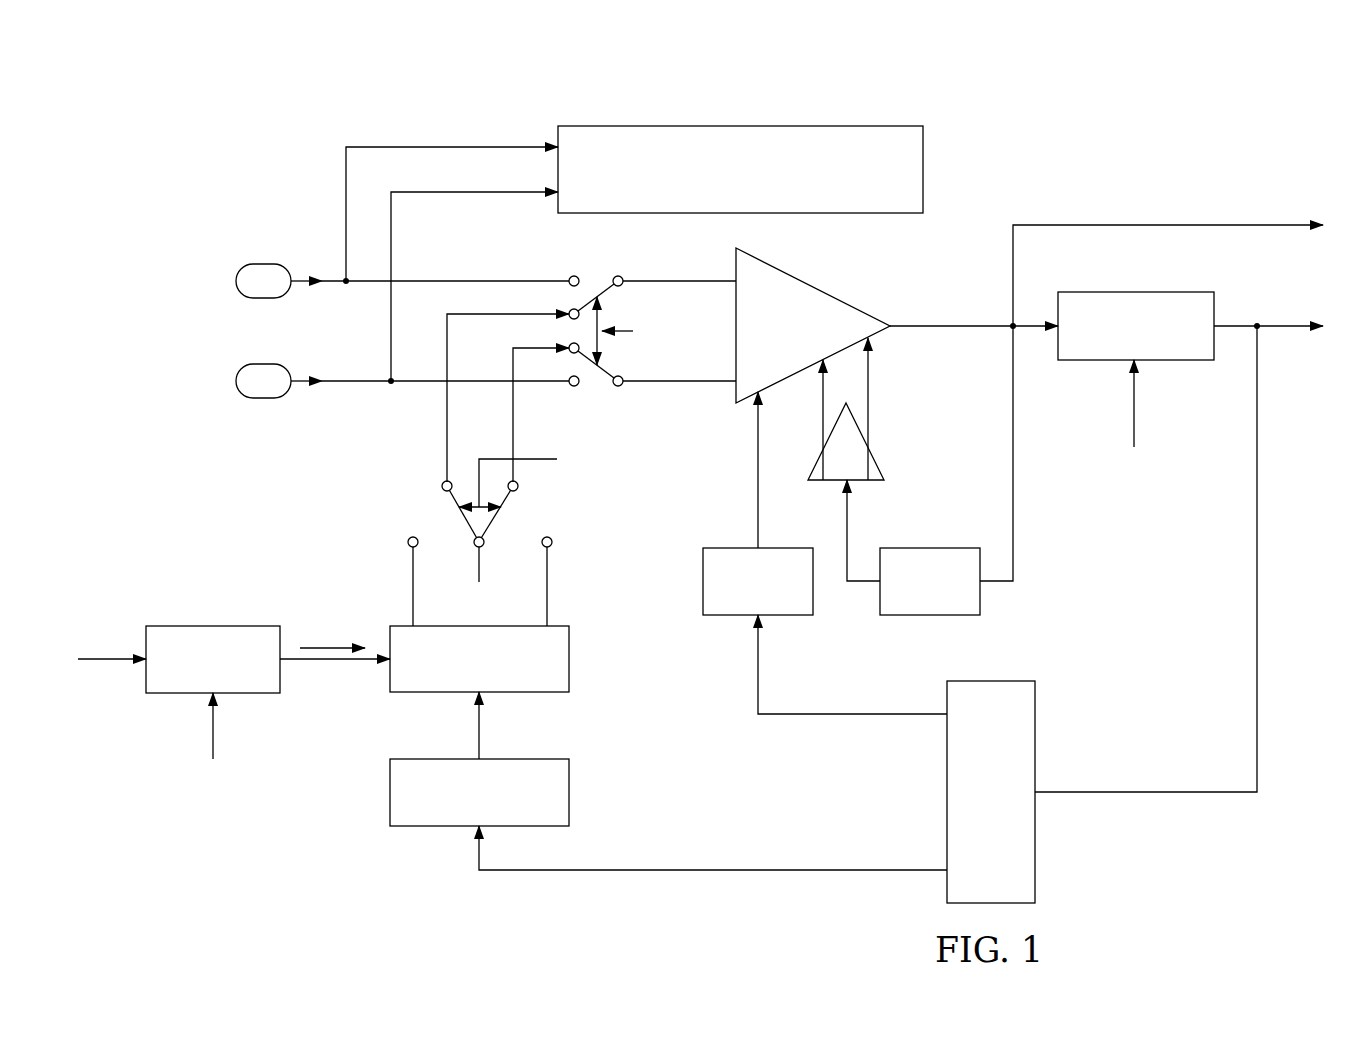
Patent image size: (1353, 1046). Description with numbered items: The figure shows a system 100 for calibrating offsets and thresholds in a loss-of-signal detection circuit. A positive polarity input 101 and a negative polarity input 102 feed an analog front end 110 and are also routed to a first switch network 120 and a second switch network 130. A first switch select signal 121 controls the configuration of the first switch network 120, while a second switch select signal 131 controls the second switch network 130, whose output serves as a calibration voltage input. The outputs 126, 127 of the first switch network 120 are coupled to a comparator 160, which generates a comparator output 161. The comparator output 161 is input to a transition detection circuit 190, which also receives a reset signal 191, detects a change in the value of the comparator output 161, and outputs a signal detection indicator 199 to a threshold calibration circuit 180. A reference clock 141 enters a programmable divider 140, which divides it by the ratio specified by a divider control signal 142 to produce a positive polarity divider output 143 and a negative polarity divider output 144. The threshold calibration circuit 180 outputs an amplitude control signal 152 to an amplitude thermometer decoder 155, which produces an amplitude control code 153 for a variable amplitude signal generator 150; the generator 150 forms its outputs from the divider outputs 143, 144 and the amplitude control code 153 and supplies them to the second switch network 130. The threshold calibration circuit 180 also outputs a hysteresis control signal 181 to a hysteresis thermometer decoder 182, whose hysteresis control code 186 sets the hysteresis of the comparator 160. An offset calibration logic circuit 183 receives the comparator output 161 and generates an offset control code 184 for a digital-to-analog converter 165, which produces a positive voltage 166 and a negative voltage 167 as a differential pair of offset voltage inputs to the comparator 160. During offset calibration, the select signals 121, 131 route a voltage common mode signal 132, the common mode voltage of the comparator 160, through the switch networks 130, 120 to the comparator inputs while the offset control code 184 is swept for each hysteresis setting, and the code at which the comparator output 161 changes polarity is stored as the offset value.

The system 100 is at (406, 95).
The positive polarity input 101 is at (263, 263).
The negative polarity input 102 is at (263, 399).
The analog front end 110 is at (742, 123).
The first switch network 120 is at (597, 395).
The first switch select signal 121 is at (633, 331).
The first amplifier input 126 is at (680, 278).
The second amplifier input 127 is at (682, 385).
The second switch network 130 is at (427, 513).
The second switch select signal 131 is at (533, 458).
The voltage common mode signal 132 is at (482, 563).
The programmable divider 140 is at (200, 625).
The reference clock 141 is at (112, 663).
The divider control signal 142 is at (212, 727).
The positive polarity divider output 143 is at (333, 667).
The negative polarity divider output 144 is at (327, 648).
The variable amplitude signal generator 150 is at (433, 697).
The amplitude control signal 152 is at (713, 872).
The amplitude control code 153 is at (482, 725).
The amplitude thermometer decoder 155 is at (390, 793).
The comparator 160 is at (818, 288).
The comparator output 161 is at (953, 323).
The digital-to-analog converter 165 is at (878, 462).
The positive voltage 166 is at (820, 413).
The negative voltage 167 is at (873, 392).
The threshold calibration circuit 180 is at (1035, 838).
The hysteresis control signal 181 is at (755, 665).
The hysteresis thermometer decoder 182 is at (703, 578).
The offset calibration logic circuit 183 is at (928, 618).
The offset control code 184 is at (852, 520).
The hysteresis control code 186 is at (755, 468).
The transition detection circuit 190 is at (1152, 290).
The reset signal 191 is at (1132, 405).
The signal detection indicator 199 is at (1290, 330).